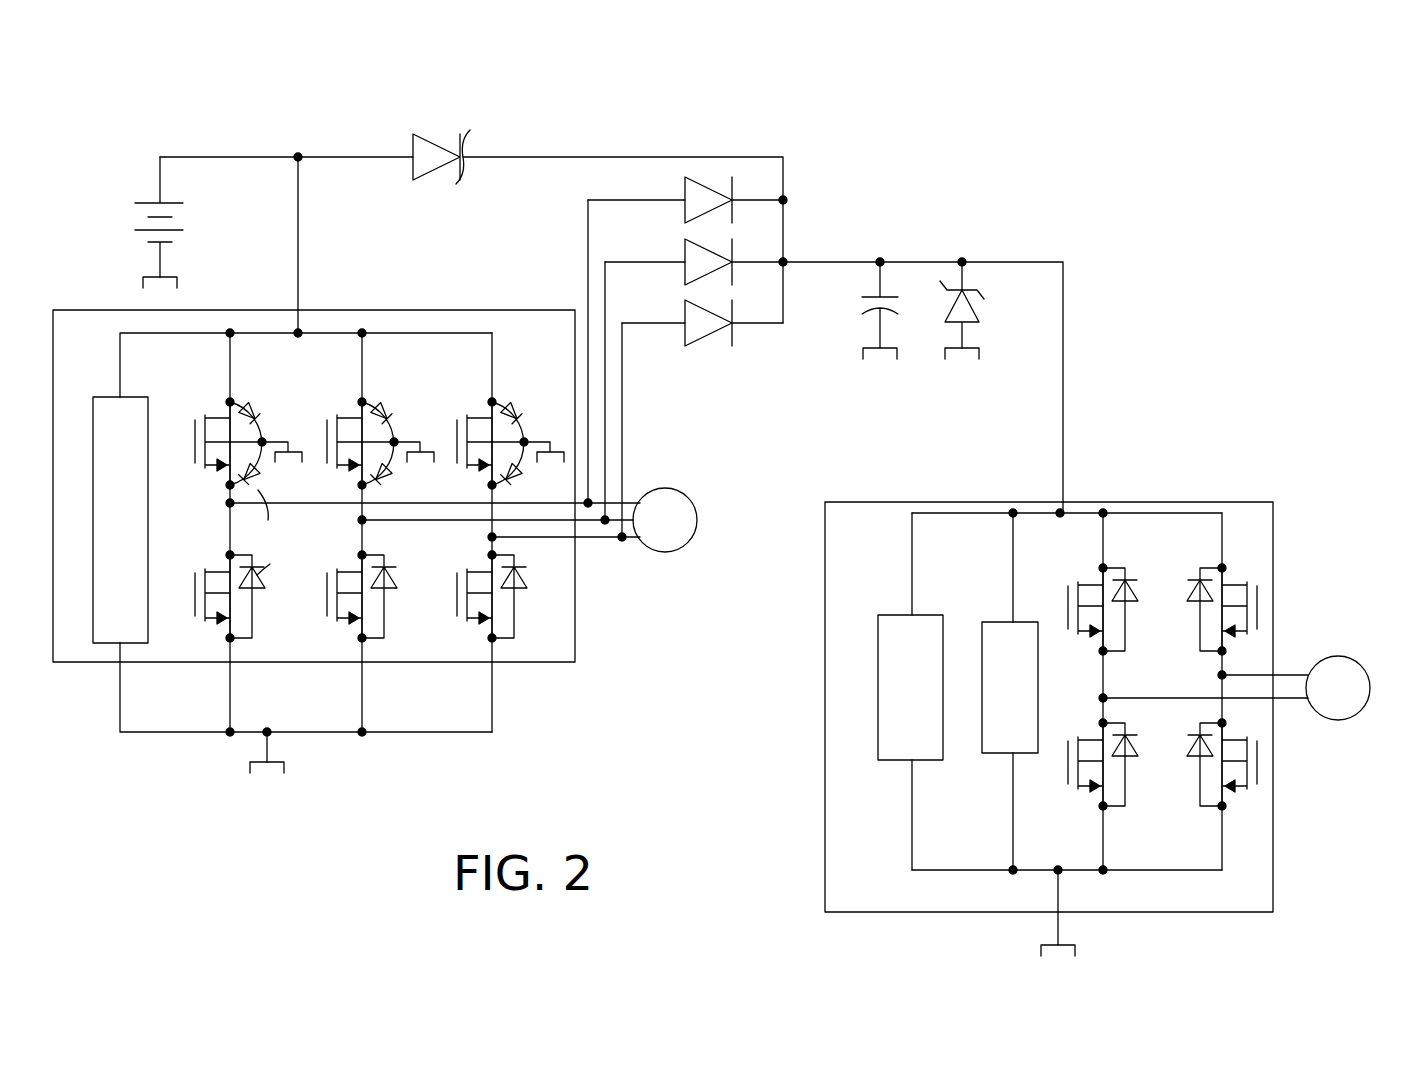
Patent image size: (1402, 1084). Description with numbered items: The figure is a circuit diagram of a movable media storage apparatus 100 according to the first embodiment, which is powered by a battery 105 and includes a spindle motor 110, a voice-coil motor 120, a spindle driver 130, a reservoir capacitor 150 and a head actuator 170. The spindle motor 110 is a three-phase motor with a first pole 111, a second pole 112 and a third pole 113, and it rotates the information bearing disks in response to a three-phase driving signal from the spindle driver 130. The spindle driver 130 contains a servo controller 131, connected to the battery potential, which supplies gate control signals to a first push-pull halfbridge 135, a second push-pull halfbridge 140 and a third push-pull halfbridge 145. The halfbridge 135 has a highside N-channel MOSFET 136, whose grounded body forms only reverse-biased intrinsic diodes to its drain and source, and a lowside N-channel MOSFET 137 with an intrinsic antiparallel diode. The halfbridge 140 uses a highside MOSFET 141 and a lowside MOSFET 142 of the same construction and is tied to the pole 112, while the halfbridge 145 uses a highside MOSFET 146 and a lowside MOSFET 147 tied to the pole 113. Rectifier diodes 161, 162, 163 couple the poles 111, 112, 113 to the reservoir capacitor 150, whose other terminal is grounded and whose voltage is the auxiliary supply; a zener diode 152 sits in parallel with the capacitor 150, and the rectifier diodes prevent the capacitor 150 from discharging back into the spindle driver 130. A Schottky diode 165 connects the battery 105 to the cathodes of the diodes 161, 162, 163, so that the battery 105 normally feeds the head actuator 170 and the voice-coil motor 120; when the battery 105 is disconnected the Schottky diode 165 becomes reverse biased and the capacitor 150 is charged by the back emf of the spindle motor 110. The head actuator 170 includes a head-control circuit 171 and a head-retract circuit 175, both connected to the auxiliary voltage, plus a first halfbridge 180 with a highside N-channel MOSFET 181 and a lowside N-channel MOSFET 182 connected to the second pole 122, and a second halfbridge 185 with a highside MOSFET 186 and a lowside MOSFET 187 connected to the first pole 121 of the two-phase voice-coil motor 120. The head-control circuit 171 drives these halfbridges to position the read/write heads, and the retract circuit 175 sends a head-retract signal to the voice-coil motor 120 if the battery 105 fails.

The movable media storage apparatus 100 is at (1192, 184).
The battery 105 is at (173, 232).
The spindle motor 110 is at (693, 500).
The first pole 111 is at (628, 500).
The second pole 112 is at (585, 523).
The third pole 113 is at (610, 540).
The voice-coil motor 120 is at (1367, 670).
The first pole 121 is at (1290, 674).
The second pole 122 is at (1288, 702).
The spindle driver 130 is at (575, 627).
The servo controller 131 is at (150, 437).
The first push-pull halfbridge 135 is at (228, 559).
The highside N-channel MOSFET 136 is at (223, 468).
The lowside N-channel MOSFET 137 is at (223, 623).
The second push-pull halfbridge 140 is at (361, 559).
The highside MOSFET 141 is at (355, 468).
The lowside MOSFET 142 is at (345, 604).
The third push-pull halfbridge 145 is at (492, 561).
The highside MOSFET 146 is at (485, 468).
The lowside MOSFET 147 is at (485, 623).
The reservoir capacitor 150 is at (862, 290).
The zener diode 152 is at (985, 298).
The rectifier diode 161 is at (684, 197).
The rectifier diode 162 is at (684, 260).
The rectifier diode 163 is at (684, 321).
The Schottky diode 165 is at (438, 146).
The head actuator 170 is at (1118, 502).
The head-control circuit 171 is at (898, 614).
The head-retract circuit 175 is at (1003, 622).
The first halfbridge 180 is at (1078, 691).
The highside N-channel MOSFET 181 is at (1088, 590).
The lowside N-channel MOSFET 182 is at (1088, 788).
The second halfbridge 185 is at (1205, 691).
The highside MOSFET 186 is at (1238, 590).
The lowside MOSFET 187 is at (1230, 785).